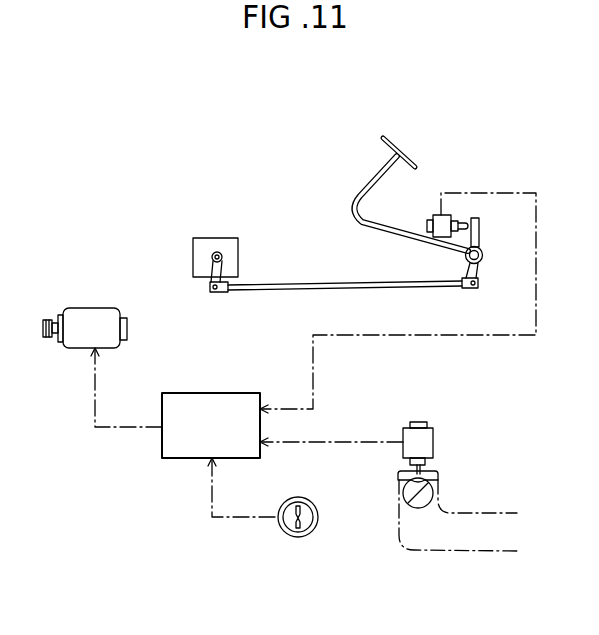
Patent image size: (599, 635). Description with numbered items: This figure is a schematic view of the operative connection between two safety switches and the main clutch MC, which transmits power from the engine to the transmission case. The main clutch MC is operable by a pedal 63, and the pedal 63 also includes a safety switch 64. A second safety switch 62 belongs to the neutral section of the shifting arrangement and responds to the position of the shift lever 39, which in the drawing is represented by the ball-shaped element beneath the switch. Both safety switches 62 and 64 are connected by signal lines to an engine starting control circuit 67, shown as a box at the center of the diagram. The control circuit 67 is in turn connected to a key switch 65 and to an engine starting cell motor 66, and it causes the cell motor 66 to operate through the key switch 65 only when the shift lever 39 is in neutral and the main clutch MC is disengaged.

The shift lever 39 is at (433, 488).
The safety switch 62 is at (433, 435).
The pedal 63 is at (410, 158).
The safety switch 64 is at (440, 213).
The key switch 65 is at (307, 533).
The engine starting cell motor 66 is at (80, 308).
The engine starting control circuit 67 is at (213, 393).
The main clutch MC is at (228, 238).